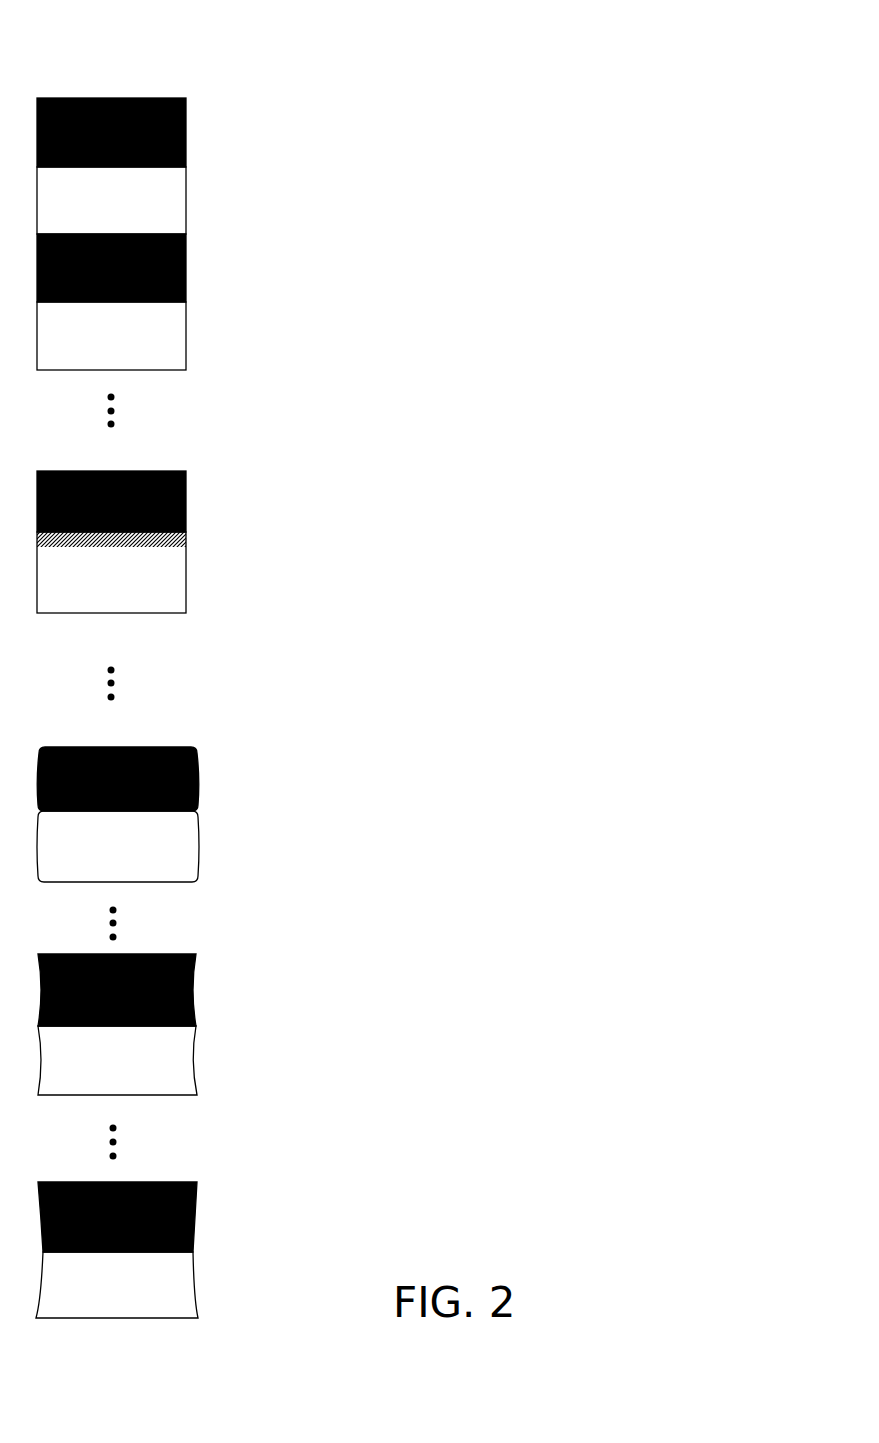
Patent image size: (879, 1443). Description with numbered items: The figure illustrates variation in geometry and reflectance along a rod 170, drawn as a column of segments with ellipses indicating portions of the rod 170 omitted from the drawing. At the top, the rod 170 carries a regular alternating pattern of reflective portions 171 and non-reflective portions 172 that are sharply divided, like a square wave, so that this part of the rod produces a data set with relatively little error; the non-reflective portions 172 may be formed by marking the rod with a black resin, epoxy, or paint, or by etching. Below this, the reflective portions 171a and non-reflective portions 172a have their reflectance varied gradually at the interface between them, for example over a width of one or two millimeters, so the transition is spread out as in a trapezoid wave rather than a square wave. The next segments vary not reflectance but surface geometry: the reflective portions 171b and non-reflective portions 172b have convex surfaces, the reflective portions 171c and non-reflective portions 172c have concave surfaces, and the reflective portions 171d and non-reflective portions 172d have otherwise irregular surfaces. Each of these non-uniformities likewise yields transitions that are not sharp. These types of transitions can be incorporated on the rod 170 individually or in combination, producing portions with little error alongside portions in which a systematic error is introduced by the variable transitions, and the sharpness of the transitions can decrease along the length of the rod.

The rod 170 is at (297, 704).
The reflective portions 171 is at (186, 133).
The non-reflective portions 172 is at (186, 205).
The reflective portions 171a is at (186, 504).
The non-reflective portions 172a is at (186, 580).
The reflective portions 171b is at (198, 781).
The non-reflective portions 172b is at (198, 852).
The reflective portions 171c is at (194, 993).
The non-reflective portions 172c is at (194, 1062).
The reflective portions 171d is at (194, 1218).
The non-reflective portions 172d is at (194, 1288).